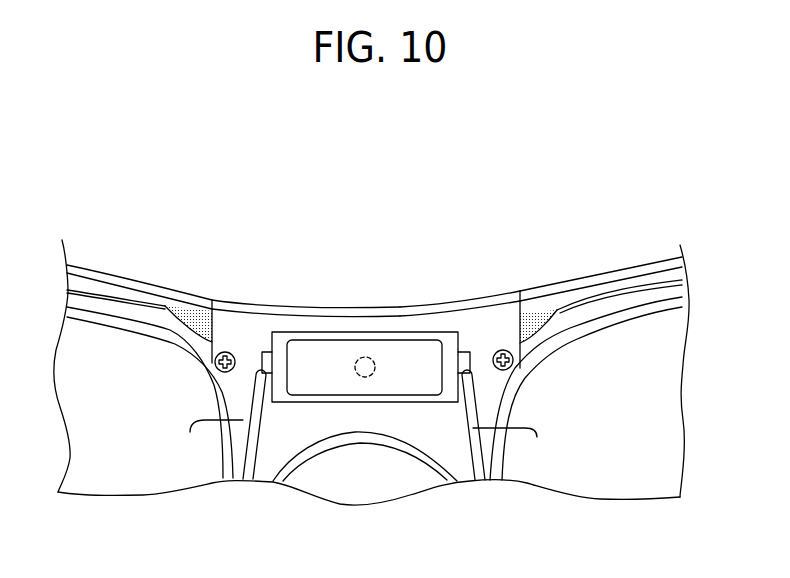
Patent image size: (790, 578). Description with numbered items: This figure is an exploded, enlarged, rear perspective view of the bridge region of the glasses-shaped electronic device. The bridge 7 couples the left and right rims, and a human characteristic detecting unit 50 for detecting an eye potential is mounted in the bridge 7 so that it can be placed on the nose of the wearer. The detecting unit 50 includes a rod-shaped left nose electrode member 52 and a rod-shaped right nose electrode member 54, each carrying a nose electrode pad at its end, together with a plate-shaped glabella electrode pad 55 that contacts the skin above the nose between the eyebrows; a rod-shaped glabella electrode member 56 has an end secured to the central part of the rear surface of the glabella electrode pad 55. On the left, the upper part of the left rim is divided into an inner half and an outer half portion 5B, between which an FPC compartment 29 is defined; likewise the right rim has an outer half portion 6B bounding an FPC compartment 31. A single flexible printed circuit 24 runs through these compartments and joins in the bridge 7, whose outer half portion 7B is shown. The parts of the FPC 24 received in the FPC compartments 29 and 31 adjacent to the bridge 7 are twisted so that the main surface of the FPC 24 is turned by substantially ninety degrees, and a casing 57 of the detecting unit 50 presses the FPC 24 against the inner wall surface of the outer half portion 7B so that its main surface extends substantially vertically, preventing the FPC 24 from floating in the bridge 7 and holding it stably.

The outer half portion 5B is at (145, 283).
The outer half portion 6B is at (562, 291).
The bridge 7 is at (352, 313).
The outer half portion 7B is at (457, 310).
The flexible printed circuit 24 is at (113, 297).
The FPC compartment 29 is at (123, 313).
The FPC compartment 31 is at (592, 310).
The human characteristic detecting unit 50 is at (404, 412).
The left nose electrode member 52 is at (190, 432).
The right nose electrode member 54 is at (537, 437).
The glabella electrode pad 55 is at (418, 348).
The glabella electrode member 56 is at (366, 378).
The casing 57 is at (247, 327).